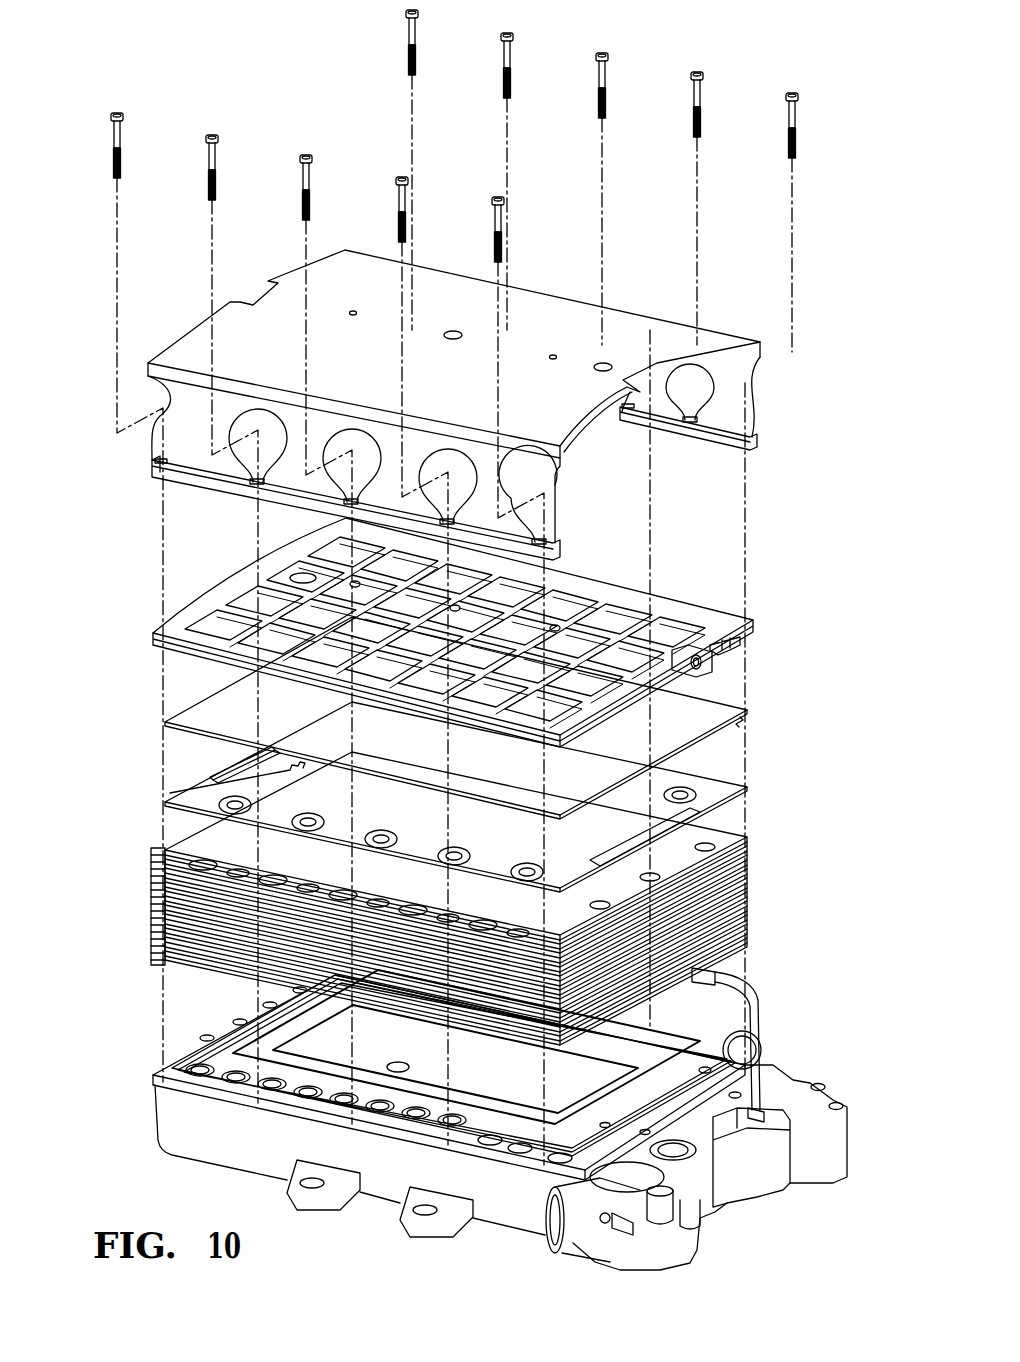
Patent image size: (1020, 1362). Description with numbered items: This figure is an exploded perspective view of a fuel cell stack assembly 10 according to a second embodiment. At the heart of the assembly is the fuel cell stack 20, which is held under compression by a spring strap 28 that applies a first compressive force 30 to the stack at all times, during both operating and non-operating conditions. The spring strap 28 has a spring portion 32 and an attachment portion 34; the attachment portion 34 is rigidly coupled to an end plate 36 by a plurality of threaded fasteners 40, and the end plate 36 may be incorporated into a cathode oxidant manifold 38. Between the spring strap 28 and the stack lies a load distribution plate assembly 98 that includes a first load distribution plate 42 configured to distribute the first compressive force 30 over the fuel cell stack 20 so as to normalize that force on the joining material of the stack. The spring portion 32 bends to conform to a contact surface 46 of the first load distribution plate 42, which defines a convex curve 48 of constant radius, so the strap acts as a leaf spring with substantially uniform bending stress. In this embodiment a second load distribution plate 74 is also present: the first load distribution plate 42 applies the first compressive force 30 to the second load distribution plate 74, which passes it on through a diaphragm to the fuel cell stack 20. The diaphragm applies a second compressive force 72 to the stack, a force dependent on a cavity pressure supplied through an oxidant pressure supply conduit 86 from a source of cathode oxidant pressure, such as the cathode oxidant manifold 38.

The fuel cell stack assembly 10 is at (843, 92).
The fuel cell stack 20 is at (175, 925).
The spring strap 28 is at (160, 367).
The first compressive force 30 is at (120, 585).
The spring portion 32 is at (624, 325).
The attachment portion 34 is at (700, 405).
The end plate 36 is at (752, 1055).
The cathode oxidant manifold 38 is at (800, 1150).
The threaded fasteners 40 is at (703, 100).
The first load distribution plate 42 is at (755, 622).
The contact surface 46 is at (672, 598).
The convex curve 48 is at (713, 627).
The second compressive force 72 is at (810, 885).
The second load distribution plate 74 is at (187, 715).
The oxidant pressure supply conduit 86 is at (762, 1010).
The load distribution plate assembly 98 is at (150, 665).